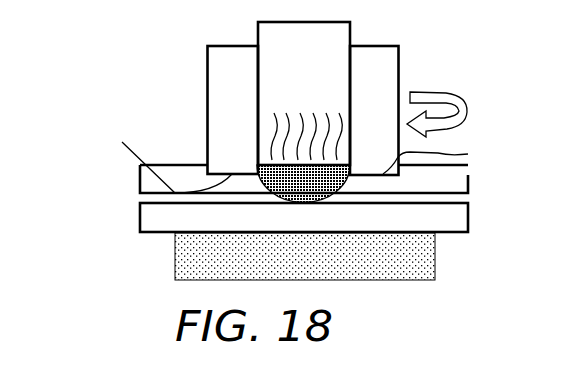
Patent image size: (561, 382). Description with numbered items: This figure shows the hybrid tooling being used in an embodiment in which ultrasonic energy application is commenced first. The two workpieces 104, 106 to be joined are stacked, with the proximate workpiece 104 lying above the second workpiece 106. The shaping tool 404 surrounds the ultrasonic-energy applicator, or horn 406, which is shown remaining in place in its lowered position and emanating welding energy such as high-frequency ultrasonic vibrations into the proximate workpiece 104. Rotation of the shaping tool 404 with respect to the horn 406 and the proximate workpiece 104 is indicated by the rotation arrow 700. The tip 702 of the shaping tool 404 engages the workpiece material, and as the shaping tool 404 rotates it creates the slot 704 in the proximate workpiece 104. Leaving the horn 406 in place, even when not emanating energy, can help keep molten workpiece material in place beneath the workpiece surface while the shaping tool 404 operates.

The shaping tool 404 is at (207, 73).
The horn 406 is at (336, 82).
The rotation arrow 700 is at (448, 92).
The tip 702 is at (269, 155).
The slot 704 is at (470, 150).
The workpiece 104 is at (469, 183).
The workpiece 106 is at (139, 224).